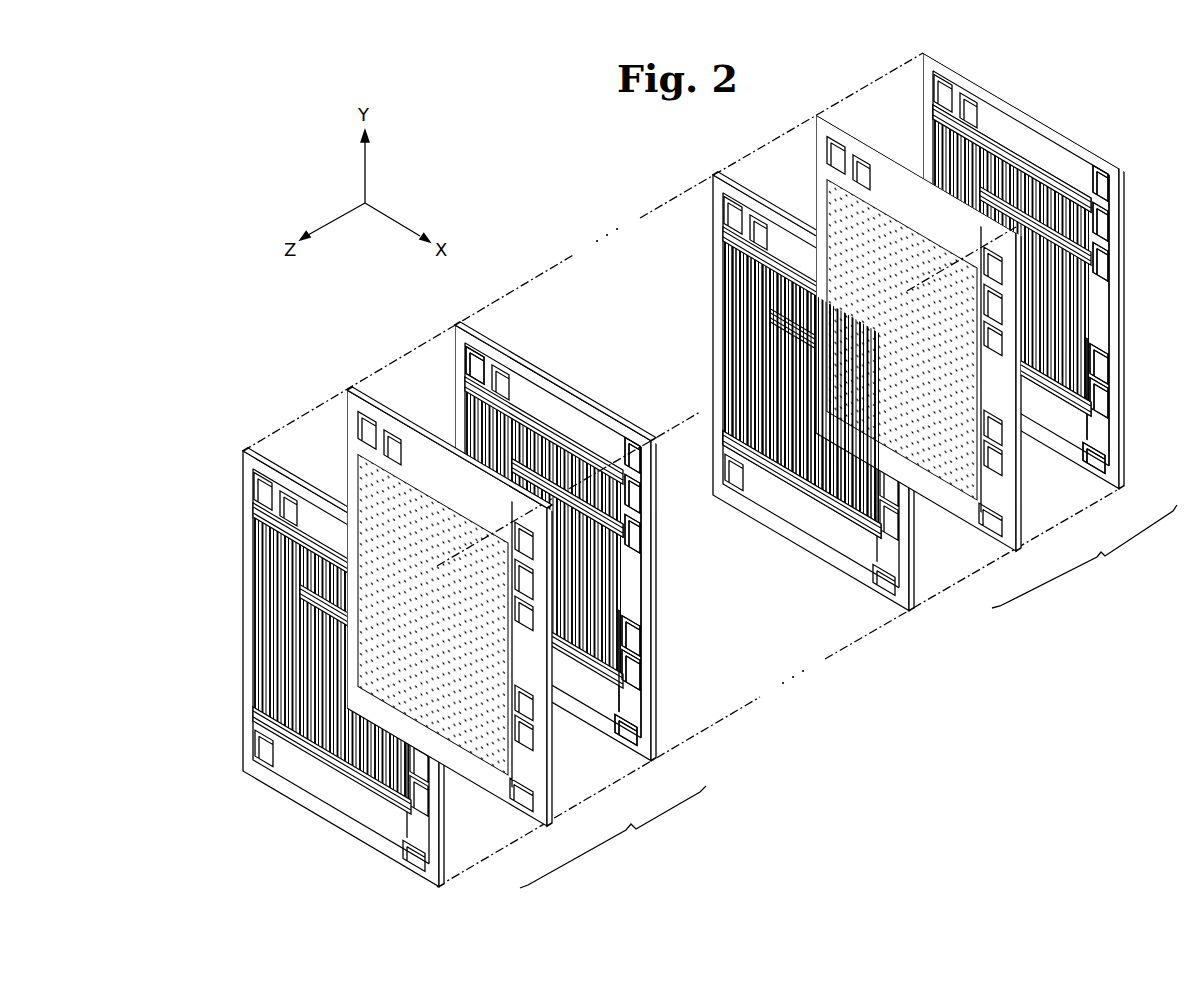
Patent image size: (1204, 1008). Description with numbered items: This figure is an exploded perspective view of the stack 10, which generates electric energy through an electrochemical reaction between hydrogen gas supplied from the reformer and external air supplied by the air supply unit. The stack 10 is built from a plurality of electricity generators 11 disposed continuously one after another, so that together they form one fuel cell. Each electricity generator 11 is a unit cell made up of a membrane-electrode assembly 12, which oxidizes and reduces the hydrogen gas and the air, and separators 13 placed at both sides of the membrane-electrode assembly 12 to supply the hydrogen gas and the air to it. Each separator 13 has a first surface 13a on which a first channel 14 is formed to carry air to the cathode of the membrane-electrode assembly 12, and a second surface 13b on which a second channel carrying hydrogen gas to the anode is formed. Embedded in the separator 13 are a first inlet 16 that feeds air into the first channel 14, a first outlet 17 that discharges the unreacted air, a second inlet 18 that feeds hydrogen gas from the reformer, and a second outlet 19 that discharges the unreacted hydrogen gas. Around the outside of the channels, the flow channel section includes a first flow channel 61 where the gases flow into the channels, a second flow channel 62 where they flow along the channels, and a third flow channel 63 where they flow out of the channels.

The stack 10 is at (631, 163).
The electricity generator 11 is at (848, 696).
The membrane-electrode assembly 12 is at (547, 808).
The separator 13 is at (443, 857).
The first surface 13a is at (560, 398).
The second surface 13b is at (414, 420).
The first channel 14 is at (737, 350).
The first inlet 16 is at (618, 488).
The first outlet 17 is at (793, 492).
The second inlet 18 is at (472, 366).
The second outlet 19 is at (630, 664).
The first flow channel 61 is at (1031, 134).
The second flow channel 62 is at (1105, 300).
The third flow channel 63 is at (1054, 442).